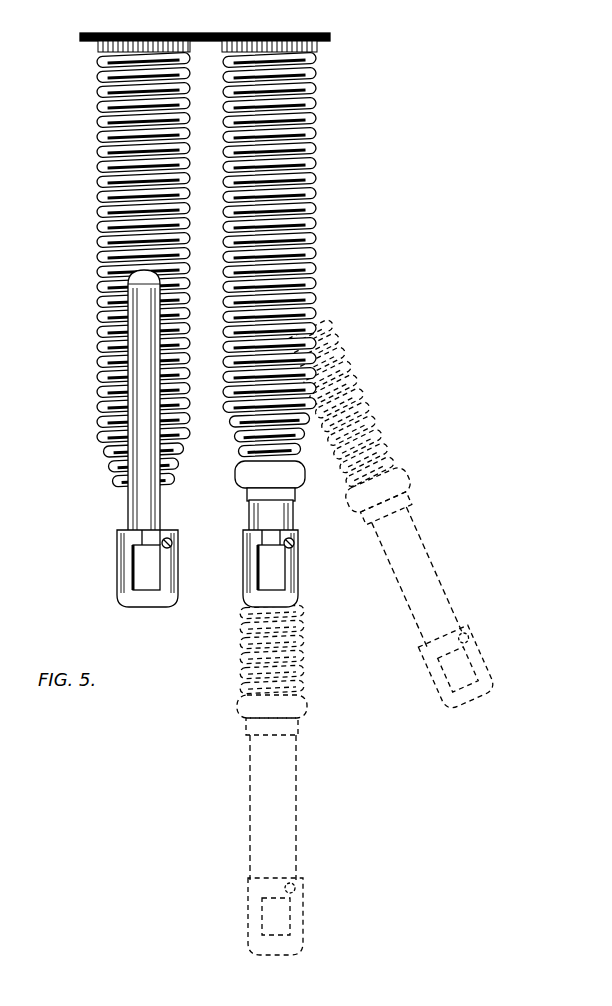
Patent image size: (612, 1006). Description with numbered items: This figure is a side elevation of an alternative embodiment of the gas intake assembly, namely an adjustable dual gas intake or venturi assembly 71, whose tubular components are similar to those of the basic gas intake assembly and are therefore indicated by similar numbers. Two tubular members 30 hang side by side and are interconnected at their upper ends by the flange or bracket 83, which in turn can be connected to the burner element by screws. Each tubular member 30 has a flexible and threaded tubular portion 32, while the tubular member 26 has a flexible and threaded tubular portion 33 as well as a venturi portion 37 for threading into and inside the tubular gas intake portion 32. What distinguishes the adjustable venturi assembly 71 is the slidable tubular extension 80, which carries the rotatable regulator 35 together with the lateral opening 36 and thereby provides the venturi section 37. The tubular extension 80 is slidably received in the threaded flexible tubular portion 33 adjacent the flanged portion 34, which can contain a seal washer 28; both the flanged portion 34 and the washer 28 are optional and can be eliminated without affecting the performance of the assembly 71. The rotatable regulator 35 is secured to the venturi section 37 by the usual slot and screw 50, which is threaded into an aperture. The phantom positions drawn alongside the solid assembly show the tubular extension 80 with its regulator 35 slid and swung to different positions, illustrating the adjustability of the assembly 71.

The flange or bracket 83 is at (290, 33).
The tubular member 30 is at (96, 98).
The flexible and threaded tubular portion 32 is at (100, 197).
The adjustable dual gas intake or venturi assembly 71 is at (320, 167).
The tubular member 26 is at (164, 432).
The flexible and threaded tubular portion 33 is at (114, 418).
The flanged portion 34 is at (110, 471).
The seal washer 28 is at (114, 481).
The slidable tubular extension 80 is at (128, 505).
The venturi portion 37 is at (141, 534).
The rotatable regulator 35 is at (118, 553).
The lateral opening 36 is at (148, 568).
The screw 50 is at (171, 546).